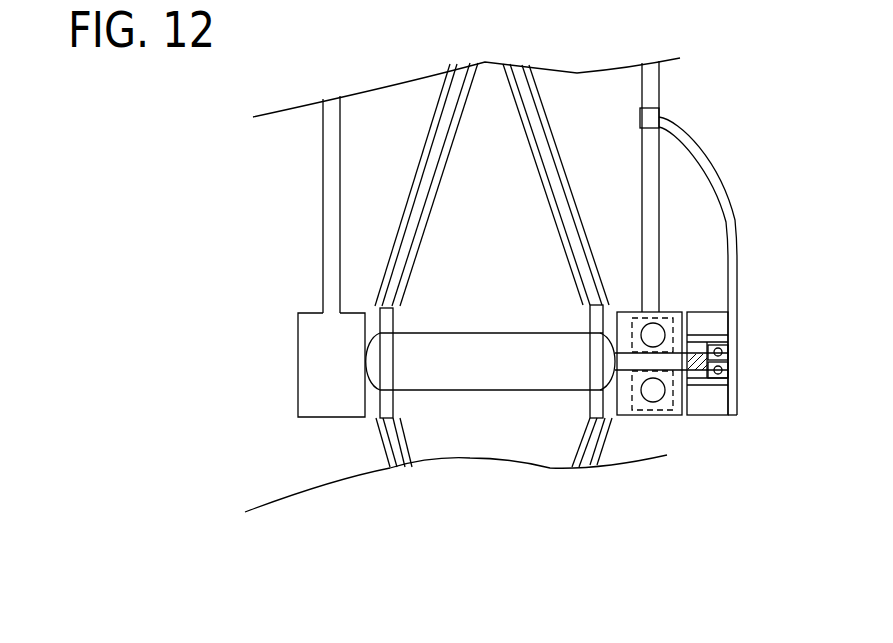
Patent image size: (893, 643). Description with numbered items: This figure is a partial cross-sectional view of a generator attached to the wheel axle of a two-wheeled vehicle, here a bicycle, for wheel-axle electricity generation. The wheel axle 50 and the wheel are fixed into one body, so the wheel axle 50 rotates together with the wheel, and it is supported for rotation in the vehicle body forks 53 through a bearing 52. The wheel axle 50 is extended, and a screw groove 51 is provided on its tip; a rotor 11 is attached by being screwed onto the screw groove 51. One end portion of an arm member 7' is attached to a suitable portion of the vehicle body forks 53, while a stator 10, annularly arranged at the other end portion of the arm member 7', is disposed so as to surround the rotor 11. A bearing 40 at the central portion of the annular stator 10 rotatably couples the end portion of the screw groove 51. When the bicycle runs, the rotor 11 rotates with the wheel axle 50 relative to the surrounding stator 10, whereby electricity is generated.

The vehicle body fork 53 is at (660, 85).
The arm member 7' is at (705, 264).
The stator 10 is at (697, 312).
The screw groove 51 is at (728, 333).
The bearing 40 is at (723, 340).
The rotor 11 is at (700, 388).
The wheel axle 50 is at (637, 362).
The bearing 52 is at (667, 410).